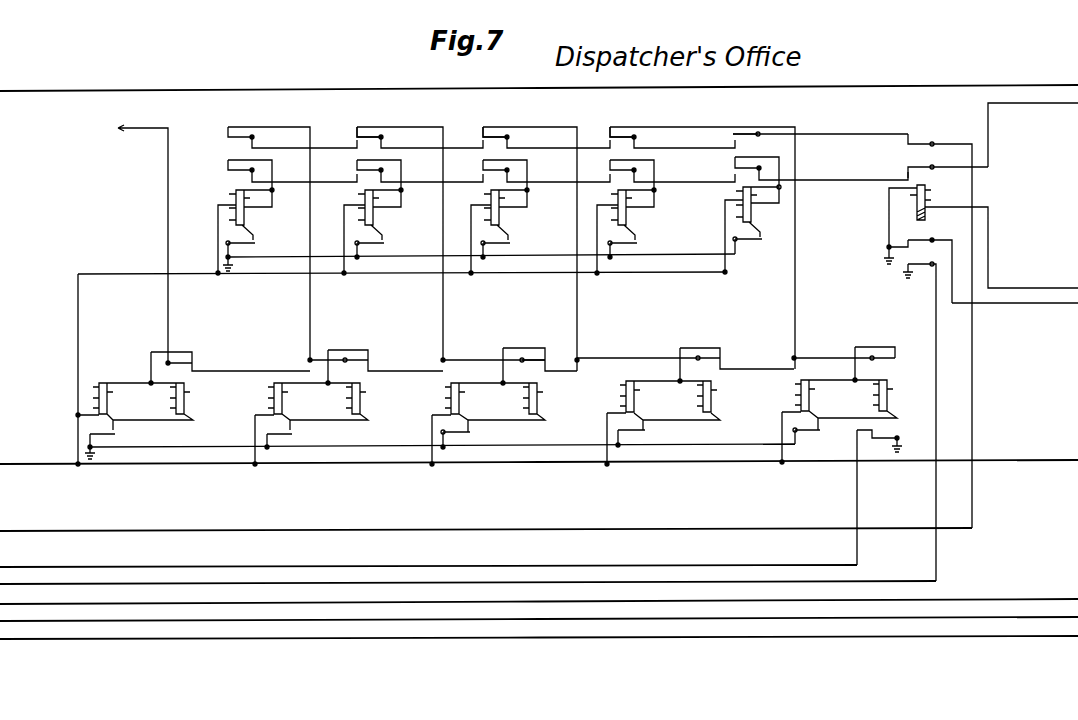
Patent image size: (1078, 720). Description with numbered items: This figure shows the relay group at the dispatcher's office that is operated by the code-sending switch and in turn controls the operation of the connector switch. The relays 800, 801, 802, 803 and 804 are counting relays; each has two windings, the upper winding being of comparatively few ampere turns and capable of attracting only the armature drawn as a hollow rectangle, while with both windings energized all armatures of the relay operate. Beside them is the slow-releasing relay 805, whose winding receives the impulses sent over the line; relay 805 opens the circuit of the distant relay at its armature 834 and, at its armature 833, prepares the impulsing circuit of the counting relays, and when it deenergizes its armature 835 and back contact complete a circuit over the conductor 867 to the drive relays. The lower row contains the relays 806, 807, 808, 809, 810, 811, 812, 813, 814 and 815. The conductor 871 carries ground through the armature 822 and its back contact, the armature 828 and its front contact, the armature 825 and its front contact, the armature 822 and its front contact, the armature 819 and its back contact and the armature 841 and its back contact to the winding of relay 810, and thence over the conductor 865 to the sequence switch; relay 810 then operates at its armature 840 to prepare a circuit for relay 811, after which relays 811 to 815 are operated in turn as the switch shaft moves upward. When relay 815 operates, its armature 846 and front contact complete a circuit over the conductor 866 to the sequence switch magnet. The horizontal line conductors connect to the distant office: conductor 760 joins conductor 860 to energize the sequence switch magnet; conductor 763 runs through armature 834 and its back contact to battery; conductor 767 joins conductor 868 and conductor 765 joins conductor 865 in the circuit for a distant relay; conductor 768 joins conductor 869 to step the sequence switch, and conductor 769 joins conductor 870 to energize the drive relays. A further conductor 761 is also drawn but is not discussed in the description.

The conductor 760 is at (1038, 85).
The line wire 761 is at (1048, 103).
The conductor 763 is at (1025, 303).
The conductor 765 is at (1052, 458).
The conductor 767 is at (1048, 590).
The conductor 768 is at (1015, 617).
The conductor 769 is at (1050, 638).
The counting relay 800 is at (250, 217).
The counting relay 801 is at (376, 217).
The counting relay 802 is at (503, 217).
The counting relay 803 is at (632, 217).
The counting relay 804 is at (760, 212).
The slow-releasing relay 805 is at (915, 196).
The relay 806 is at (107, 404).
The relay 807 is at (184, 404).
The relay 808 is at (282, 404).
The relay 809 is at (360, 404).
The relay 810 is at (459, 404).
The relay 811 is at (537, 404).
The relay 812 is at (634, 402).
The relay 813 is at (711, 402).
The relay 814 is at (809, 401).
The relay 815 is at (887, 401).
The armature 819 is at (370, 132).
The armature 822 is at (922, 142).
The armature 825 is at (622, 132).
The armature 828 is at (747, 132).
The armature 833 is at (910, 162).
The armature 834 is at (926, 236).
The armature 835 is at (905, 262).
The armature 840 is at (450, 436).
The armature 841 is at (530, 356).
The armature 846 is at (880, 440).
The conductor 860 is at (25, 91).
The conductor 865 is at (38, 464).
The conductor 866 is at (42, 567).
The conductor 867 is at (15, 584).
The conductor 868 is at (38, 604).
The conductor 869 is at (30, 621).
The conductor 870 is at (43, 637).
The conductor 871 is at (36, 531).